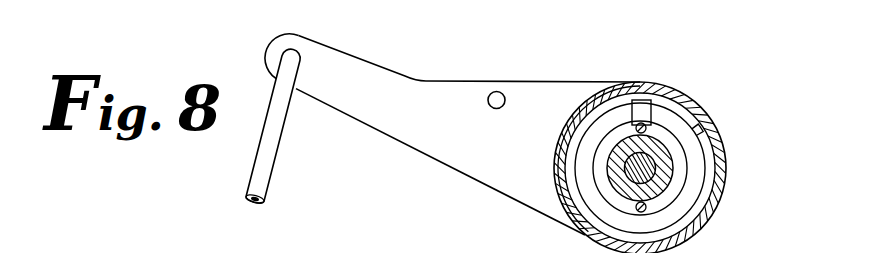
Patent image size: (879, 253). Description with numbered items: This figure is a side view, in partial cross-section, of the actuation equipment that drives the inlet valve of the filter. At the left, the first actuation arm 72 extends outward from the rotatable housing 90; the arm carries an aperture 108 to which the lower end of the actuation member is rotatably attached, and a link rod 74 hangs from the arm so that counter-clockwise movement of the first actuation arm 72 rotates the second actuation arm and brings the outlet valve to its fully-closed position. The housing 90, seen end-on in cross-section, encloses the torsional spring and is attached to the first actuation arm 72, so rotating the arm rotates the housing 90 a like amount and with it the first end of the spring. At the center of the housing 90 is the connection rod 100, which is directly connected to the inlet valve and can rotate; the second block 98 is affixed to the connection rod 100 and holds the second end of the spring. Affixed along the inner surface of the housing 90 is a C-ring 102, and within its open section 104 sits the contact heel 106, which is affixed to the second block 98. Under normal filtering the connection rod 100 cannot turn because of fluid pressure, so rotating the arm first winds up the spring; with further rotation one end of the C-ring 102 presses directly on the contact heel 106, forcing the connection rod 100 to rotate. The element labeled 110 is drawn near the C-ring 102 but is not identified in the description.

The lever arm 72 is at (382, 82).
The handle rod 74 is at (267, 146).
The cylindrical housing 90 is at (714, 141).
The hub 98 is at (653, 187).
The shaft 100 is at (645, 172).
The bushing 102 is at (712, 200).
The sleeve 104 is at (677, 113).
The key block 106 is at (641, 110).
The aperture 108 is at (497, 92).
The retaining tab 110 is at (697, 110).